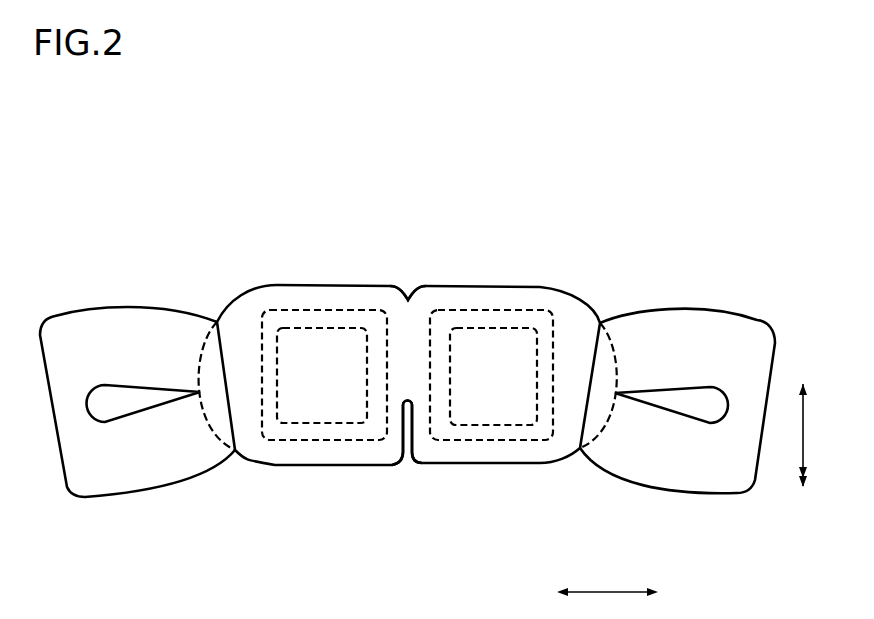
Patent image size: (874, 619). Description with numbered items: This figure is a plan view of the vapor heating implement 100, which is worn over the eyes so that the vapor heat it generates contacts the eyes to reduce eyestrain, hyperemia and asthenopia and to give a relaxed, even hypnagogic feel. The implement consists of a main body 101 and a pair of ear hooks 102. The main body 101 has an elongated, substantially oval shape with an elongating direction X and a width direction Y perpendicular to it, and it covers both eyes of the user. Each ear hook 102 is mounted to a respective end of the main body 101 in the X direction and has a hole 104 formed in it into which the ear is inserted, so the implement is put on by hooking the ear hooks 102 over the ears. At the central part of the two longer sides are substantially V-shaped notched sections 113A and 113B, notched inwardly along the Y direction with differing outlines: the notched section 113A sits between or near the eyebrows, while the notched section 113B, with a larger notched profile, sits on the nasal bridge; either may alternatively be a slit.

The vapor heating implement 100 is at (536, 156).
The main body 101 is at (272, 280).
The ear hooks 102 is at (123, 303).
The hole 104 is at (113, 427).
The notched section 113A is at (396, 281).
The notched section 113B is at (418, 468).